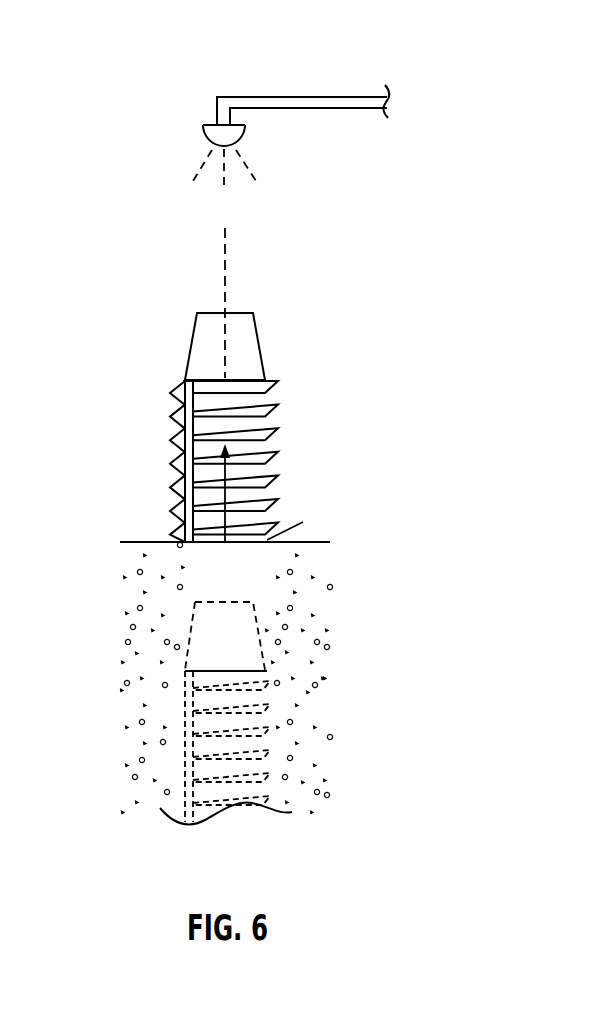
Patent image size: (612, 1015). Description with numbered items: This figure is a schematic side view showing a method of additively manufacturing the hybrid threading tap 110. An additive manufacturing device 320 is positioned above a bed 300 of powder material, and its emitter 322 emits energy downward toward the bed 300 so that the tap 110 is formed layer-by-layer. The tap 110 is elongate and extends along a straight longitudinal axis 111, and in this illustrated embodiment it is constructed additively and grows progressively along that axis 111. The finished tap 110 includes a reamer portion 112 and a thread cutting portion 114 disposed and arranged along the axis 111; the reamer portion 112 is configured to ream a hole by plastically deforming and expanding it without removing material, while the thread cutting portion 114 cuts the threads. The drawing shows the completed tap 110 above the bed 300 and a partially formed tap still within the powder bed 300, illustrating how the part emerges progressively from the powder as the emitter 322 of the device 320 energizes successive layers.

The additive manufacturing device 320 is at (320, 54).
The emitter 322 is at (207, 134).
The longitudinal axis 111 is at (227, 258).
The hybrid threading tap 110 is at (141, 388).
The reamer portion 112 is at (207, 332).
The thread cutting portion 114 is at (193, 468).
The bed of powder material 300 is at (119, 558).